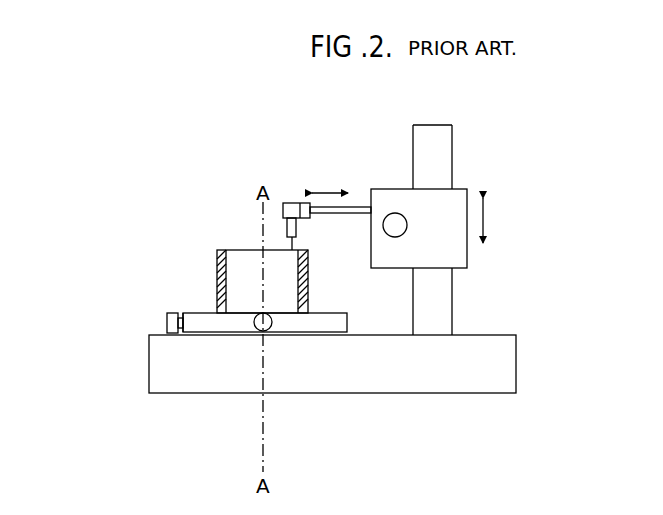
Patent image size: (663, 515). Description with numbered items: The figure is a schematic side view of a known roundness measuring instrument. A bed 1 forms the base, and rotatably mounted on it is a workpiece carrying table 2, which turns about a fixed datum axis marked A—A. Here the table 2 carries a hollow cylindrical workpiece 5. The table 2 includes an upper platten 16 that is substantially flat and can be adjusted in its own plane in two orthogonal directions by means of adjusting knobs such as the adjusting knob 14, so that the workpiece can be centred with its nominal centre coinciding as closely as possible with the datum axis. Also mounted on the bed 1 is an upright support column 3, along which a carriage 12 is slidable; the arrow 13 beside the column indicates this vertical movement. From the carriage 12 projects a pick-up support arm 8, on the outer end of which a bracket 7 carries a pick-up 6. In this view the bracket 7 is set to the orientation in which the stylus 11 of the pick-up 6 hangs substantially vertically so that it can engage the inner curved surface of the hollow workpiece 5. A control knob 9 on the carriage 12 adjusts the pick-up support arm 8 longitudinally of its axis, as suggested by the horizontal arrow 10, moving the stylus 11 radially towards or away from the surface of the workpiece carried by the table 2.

The bed 1 is at (240, 380).
The workpiece carrying table 2 is at (225, 323).
The upright support column 3 is at (438, 307).
The hollow cylindrical workpiece 5 is at (227, 250).
The pick-up 6 is at (288, 207).
The bracket 7 is at (297, 203).
The pick-up support arm 8 is at (353, 212).
The control knob 9 is at (388, 230).
The horizontal movement arrow 10 is at (332, 187).
The stylus 11 is at (298, 257).
The carriage 12 is at (453, 255).
The vertical movement arrow 13 is at (485, 213).
The adjusting knob 14 is at (167, 325).
The upper platten 16 is at (188, 312).